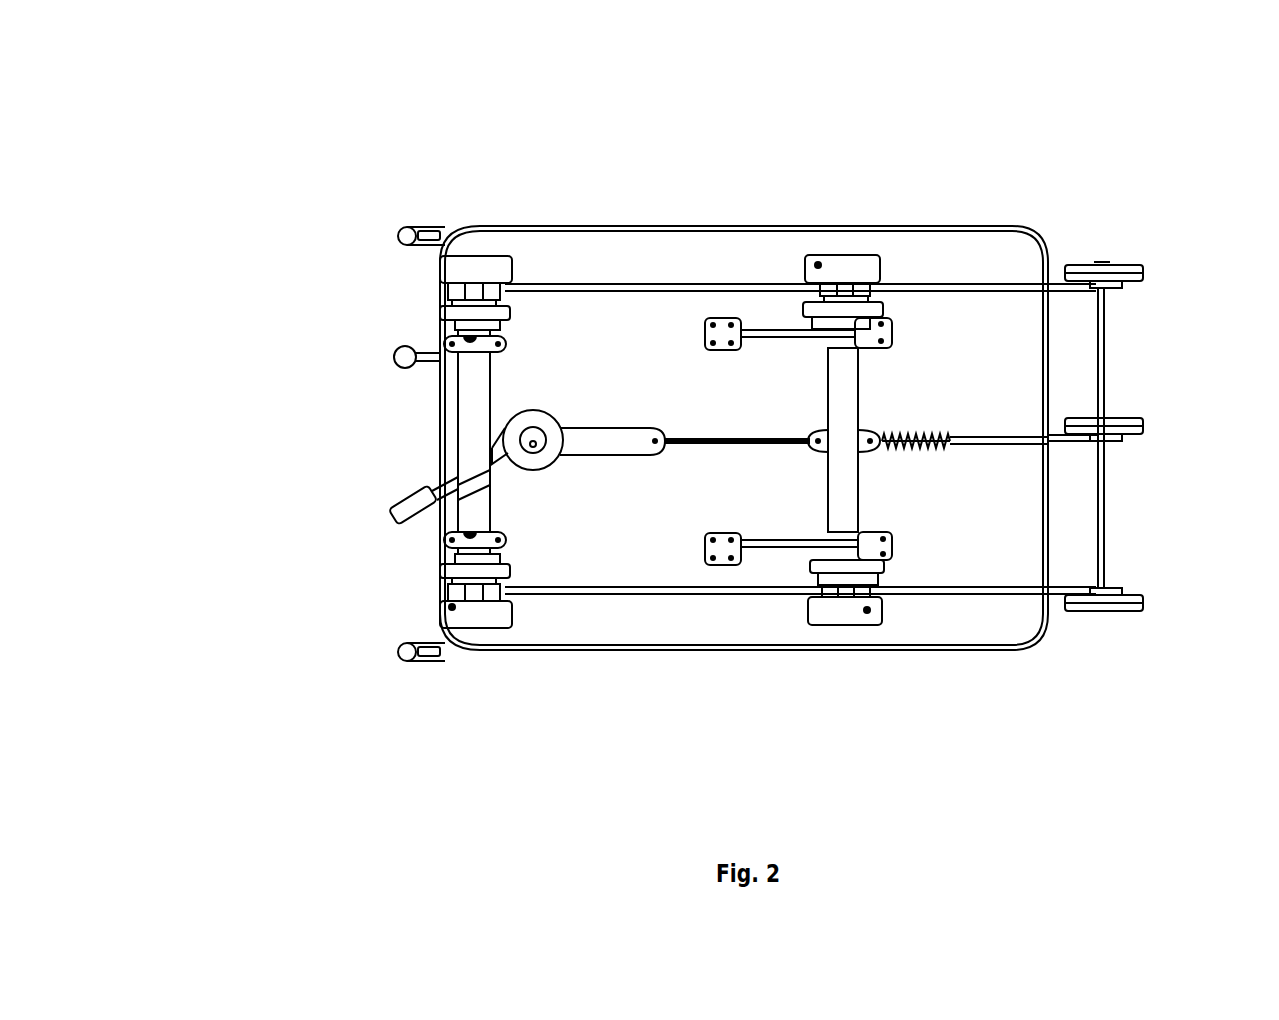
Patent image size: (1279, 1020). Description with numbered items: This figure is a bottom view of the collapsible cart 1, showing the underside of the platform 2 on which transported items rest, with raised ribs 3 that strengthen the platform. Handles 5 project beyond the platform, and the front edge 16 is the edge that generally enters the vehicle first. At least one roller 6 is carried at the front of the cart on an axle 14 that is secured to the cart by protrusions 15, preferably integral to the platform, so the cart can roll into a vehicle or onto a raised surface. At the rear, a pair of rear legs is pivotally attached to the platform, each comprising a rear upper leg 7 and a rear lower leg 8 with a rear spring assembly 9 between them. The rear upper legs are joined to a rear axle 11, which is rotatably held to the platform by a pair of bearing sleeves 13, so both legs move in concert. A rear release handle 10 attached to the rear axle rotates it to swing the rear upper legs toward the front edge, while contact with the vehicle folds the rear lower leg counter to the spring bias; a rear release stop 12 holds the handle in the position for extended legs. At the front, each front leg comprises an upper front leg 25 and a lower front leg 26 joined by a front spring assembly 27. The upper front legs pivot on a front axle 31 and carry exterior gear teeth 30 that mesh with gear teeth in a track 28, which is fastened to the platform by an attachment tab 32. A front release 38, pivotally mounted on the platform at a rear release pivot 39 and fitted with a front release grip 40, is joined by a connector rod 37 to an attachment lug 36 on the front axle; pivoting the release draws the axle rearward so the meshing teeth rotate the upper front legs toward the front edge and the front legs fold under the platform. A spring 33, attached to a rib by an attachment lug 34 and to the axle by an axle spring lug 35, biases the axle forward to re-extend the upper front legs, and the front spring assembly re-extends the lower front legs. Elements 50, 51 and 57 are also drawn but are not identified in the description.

The collapsible cart 1 is at (350, 382).
The platform 2 is at (565, 258).
The raised ribs 3 is at (660, 282).
The handles 5 is at (415, 217).
The roller 6 is at (1145, 270).
The rear upper leg 7 is at (432, 318).
The rear lower leg 8 is at (432, 296).
The rear spring assembly 9 is at (425, 305).
The rear release handle 10 is at (390, 357).
The rear axle 11 is at (470, 368).
The rear release stop 12 is at (435, 465).
The bearing sleeves 13 is at (447, 342).
The axle 14 is at (1108, 310).
The protrusions 15 is at (1079, 291).
The front edge 16 is at (1054, 337).
The upper front leg 25 is at (894, 322).
The lower front leg 26 is at (866, 288).
The front spring assembly 27 is at (881, 303).
The track 28 is at (757, 318).
The exterior gear teeth 30 is at (878, 332).
The front axle 31 is at (845, 410).
The attachment tab 32 is at (720, 313).
The spring 33 is at (956, 428).
The attachment lug 34 is at (975, 447).
The axle spring lug 35 is at (876, 452).
The attachment lug 36 is at (812, 455).
The connector rod 37 is at (730, 438).
The front release 38 is at (578, 440).
The rear release pivot 39 is at (536, 435).
The front release grip 40 is at (395, 510).
The block 50 is at (820, 262).
The block 51 is at (500, 270).
The block 57 is at (447, 607).